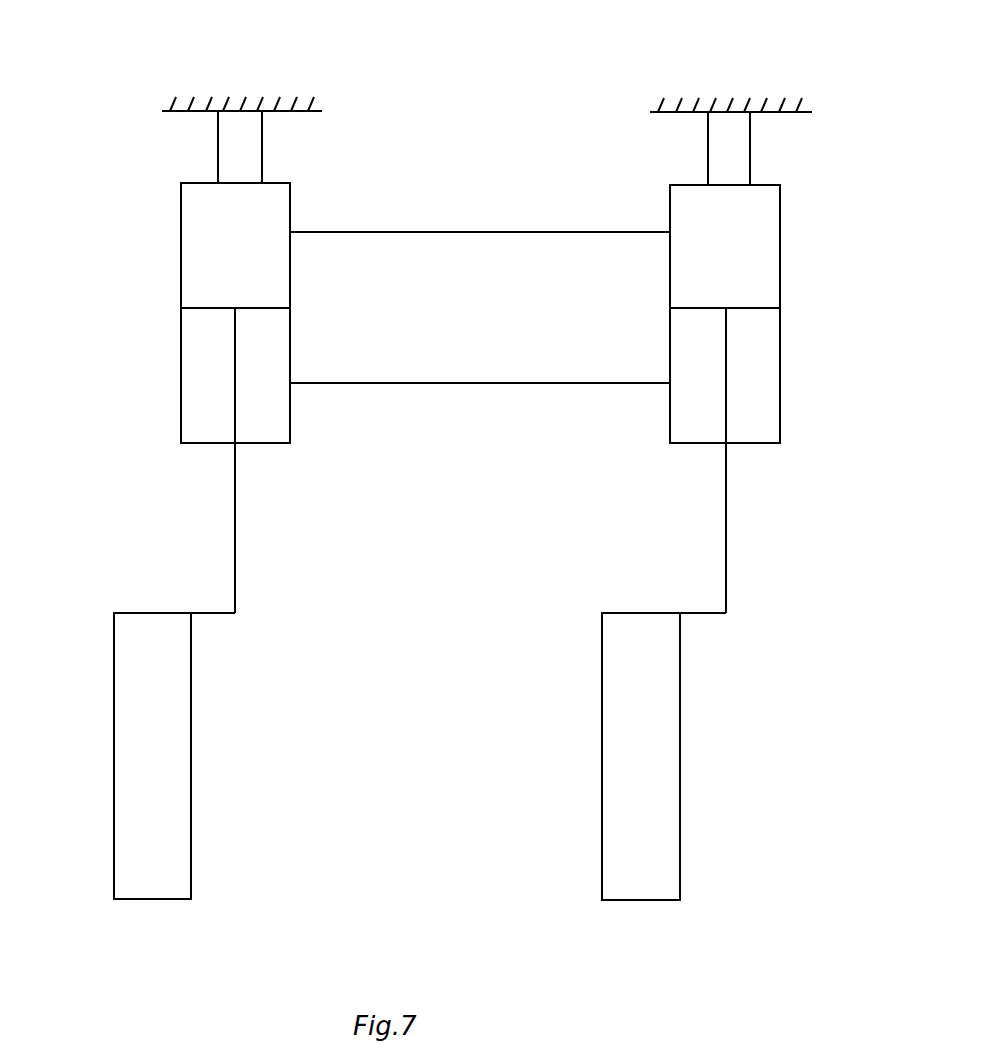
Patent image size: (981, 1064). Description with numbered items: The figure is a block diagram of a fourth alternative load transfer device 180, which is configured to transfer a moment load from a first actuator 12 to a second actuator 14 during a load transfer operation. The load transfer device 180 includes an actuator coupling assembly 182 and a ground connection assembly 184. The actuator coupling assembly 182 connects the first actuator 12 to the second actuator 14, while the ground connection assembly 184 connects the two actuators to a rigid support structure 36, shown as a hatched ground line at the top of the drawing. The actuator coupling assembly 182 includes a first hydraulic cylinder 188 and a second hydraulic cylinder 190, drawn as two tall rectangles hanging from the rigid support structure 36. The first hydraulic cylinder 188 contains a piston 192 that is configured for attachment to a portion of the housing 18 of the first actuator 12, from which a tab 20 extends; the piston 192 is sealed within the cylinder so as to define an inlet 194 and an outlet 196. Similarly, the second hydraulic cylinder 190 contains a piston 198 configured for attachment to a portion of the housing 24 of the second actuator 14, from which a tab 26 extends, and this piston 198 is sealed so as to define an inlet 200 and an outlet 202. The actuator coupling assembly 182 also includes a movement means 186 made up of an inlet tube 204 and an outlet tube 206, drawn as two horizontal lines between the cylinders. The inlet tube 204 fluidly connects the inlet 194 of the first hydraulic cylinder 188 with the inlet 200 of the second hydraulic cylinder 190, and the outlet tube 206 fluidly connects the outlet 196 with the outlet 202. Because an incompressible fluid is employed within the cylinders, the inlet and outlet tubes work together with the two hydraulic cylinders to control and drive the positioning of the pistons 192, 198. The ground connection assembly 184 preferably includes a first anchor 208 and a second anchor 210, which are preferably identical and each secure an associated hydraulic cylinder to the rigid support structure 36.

The load transfer device 180 is at (501, 41).
The rigid support structure 36 is at (192, 104).
The ground connection assembly 184 is at (264, 145).
The first anchor 208 is at (218, 153).
The second anchor 210 is at (708, 152).
The actuator coupling assembly 182 is at (181, 268).
The inlet 194 is at (272, 214).
The outlet 196 is at (274, 346).
The inlet 200 is at (680, 266).
The outlet 202 is at (682, 426).
The first hydraulic cylinder 188 is at (181, 384).
The second hydraulic cylinder 190 is at (780, 396).
The piston 192 is at (239, 510).
The piston 198 is at (728, 535).
The inlet tube 204 is at (412, 232).
The outlet tube 206 is at (426, 383).
The movement means 186 is at (537, 383).
The first actuator 12 is at (113, 788).
The housing 18 is at (182, 788).
The tab 20 is at (207, 612).
The second actuator 14 is at (601, 805).
The housing 24 is at (675, 780).
The tab 26 is at (700, 618).